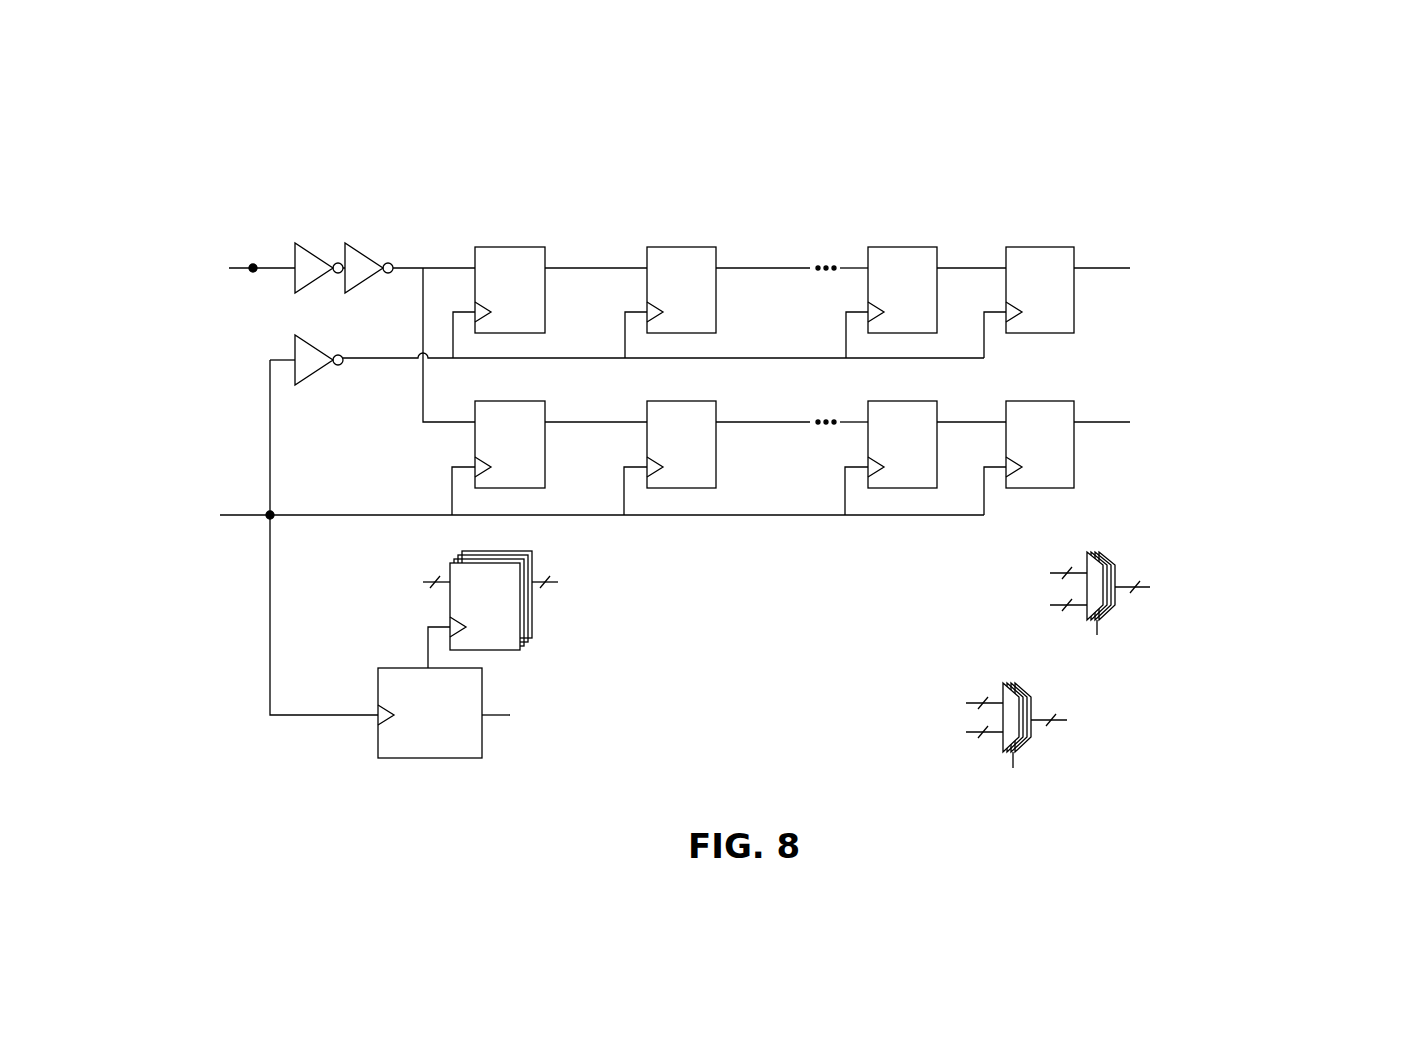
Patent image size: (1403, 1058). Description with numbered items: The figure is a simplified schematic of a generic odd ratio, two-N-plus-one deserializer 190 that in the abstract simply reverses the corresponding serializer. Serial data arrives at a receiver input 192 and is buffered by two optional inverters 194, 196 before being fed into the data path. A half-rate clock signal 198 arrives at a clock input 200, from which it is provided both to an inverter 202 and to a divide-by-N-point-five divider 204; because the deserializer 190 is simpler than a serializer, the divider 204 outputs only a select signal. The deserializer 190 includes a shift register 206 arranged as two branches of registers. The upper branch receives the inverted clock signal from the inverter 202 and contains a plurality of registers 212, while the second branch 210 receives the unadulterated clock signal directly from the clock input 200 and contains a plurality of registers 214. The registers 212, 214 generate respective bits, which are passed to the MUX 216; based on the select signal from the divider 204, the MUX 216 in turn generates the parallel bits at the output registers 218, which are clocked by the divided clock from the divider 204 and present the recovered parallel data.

The deserializer 190 is at (1234, 202).
The receiver input 192 is at (253, 263).
The inverter 194 is at (312, 250).
The inverter 196 is at (370, 255).
The half-rate clock signal 198 is at (243, 513).
The clock input 200 is at (268, 512).
The inverter 202 is at (313, 373).
The divide by N.5 divider 204 is at (423, 758).
The shift register 206 is at (764, 225).
The second branch 210 is at (832, 391).
The registers 212 is at (517, 247).
The registers 214 is at (516, 401).
The MUX 216 is at (1106, 556).
The registers 218 is at (531, 552).